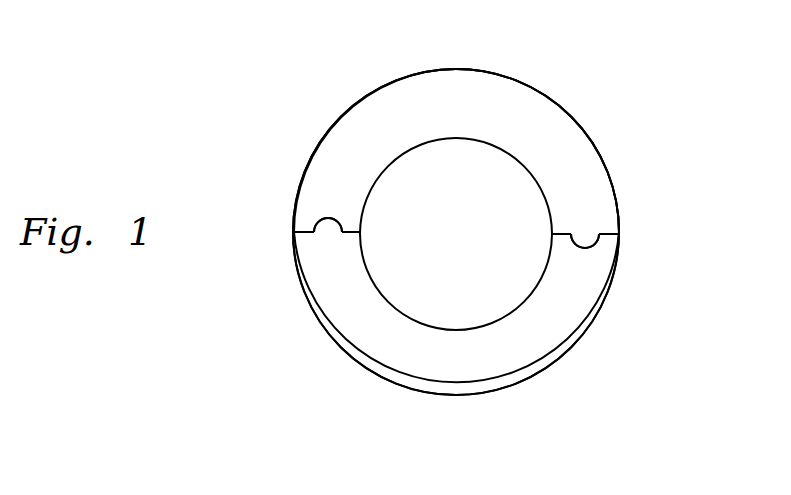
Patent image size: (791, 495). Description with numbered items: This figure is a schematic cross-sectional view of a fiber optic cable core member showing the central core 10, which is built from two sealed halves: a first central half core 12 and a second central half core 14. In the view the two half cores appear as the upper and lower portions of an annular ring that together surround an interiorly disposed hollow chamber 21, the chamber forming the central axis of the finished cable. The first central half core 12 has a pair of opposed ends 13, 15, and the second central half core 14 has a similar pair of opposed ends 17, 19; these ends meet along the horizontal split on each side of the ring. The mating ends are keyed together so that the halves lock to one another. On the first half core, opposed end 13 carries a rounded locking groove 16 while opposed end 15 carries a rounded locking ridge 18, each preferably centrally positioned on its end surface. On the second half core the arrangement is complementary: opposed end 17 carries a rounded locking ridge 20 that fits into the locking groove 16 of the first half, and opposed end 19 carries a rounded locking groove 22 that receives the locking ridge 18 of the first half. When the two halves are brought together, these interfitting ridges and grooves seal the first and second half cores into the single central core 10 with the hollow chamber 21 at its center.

The central core 10 is at (625, 152).
The first central half core 12 is at (357, 102).
The opposed end of first central half core 13 is at (312, 148).
The second central half core 14 is at (328, 338).
The opposed end of first central half core 15 is at (593, 137).
The rounded locking groove 16 is at (325, 215).
The opposed end of second central half core 17 is at (305, 292).
The rounded locking ridge 18 is at (583, 237).
The opposed end of second central half core 19 is at (615, 262).
The rounded locking ridge 20 is at (330, 227).
The hollow chamber 21 is at (473, 251).
The rounded locking groove 22 is at (590, 253).